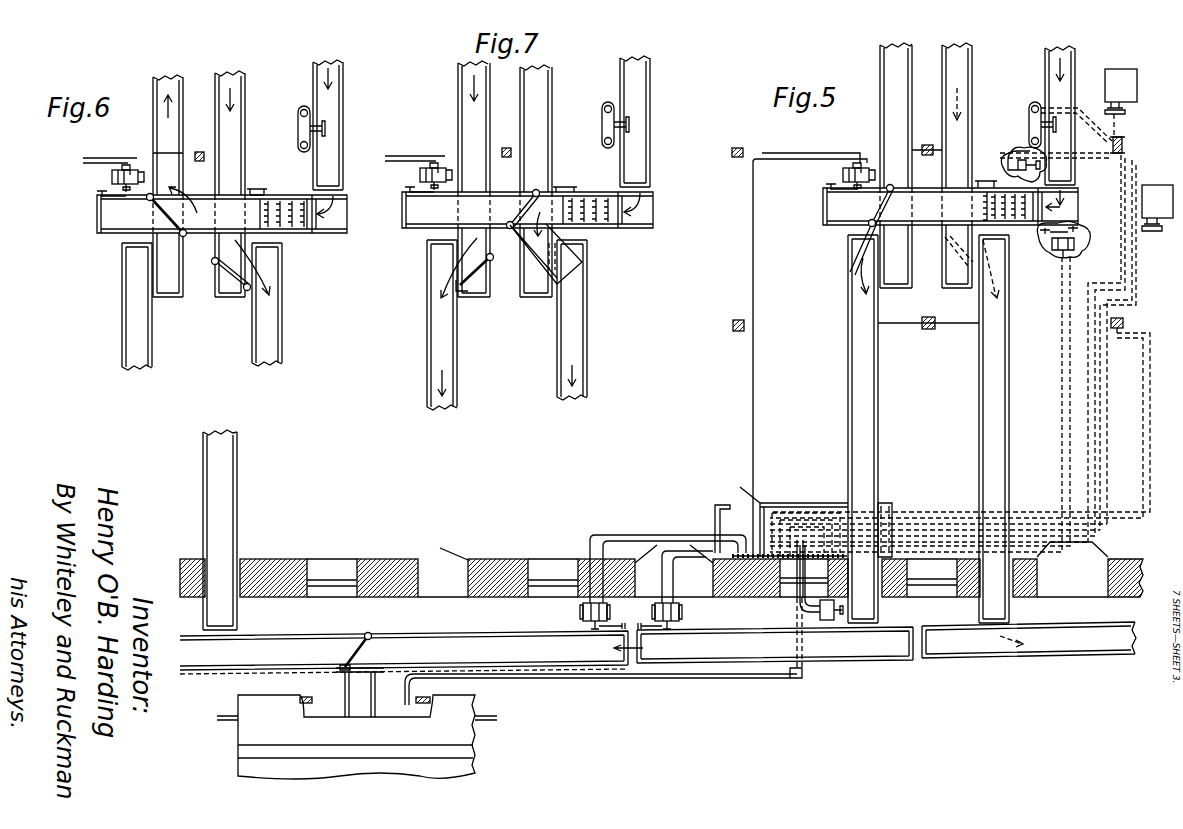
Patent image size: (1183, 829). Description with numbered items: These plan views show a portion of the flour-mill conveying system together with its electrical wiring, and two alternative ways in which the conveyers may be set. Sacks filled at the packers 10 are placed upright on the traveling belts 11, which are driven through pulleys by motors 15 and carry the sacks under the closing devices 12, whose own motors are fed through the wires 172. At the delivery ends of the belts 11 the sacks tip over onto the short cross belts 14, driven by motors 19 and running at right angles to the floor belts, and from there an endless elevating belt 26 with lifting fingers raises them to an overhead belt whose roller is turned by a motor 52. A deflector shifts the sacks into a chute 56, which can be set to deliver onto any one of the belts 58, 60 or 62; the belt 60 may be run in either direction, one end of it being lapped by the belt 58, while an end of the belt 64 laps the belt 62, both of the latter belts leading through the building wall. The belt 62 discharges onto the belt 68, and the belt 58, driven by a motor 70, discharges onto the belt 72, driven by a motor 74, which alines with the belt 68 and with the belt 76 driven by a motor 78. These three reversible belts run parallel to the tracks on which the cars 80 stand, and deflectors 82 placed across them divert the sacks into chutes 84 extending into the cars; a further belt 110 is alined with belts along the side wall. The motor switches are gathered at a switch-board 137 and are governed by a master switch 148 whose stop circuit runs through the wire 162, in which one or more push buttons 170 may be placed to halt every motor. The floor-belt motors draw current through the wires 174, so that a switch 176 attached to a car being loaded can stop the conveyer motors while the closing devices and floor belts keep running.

In FIG. 5, the packer 10 is at (1112, 69).
In FIG. 6, the traveling belt 11 is at (326, 66).
In FIG. 7, the traveling belt 11 is at (645, 83).
In FIG. 5, the traveling belt 11 is at (1053, 54).
In FIG. 6, the closing device 12 is at (299, 112).
In FIG. 7, the closing device 12 is at (602, 122).
In FIG. 5, the closing device 12 is at (1029, 110).
In FIG. 6, the cross belt 14 is at (331, 226).
In FIG. 7, the cross belt 14 is at (646, 224).
In FIG. 5, the cross belt 14 is at (1072, 196).
In FIG. 5, the motor 15 is at (1004, 163).
In FIG. 5, the motor 19 is at (1059, 256).
In FIG. 6, the elevating belt 26 is at (287, 203).
In FIG. 7, the elevating belt 26 is at (600, 222).
In FIG. 5, the elevating belt 26 is at (1023, 220).
In FIG. 6, the motor 52 is at (112, 178).
In FIG. 7, the motor 52 is at (420, 173).
In FIG. 5, the motor 52 is at (843, 173).
In FIG. 5, the chute 56 is at (851, 257).
In FIG. 6, the belt 58 is at (125, 334).
In FIG. 7, the belt 58 is at (455, 361).
In FIG. 5, the belt 58 is at (852, 366).
In FIG. 6, the belt 60 is at (162, 77).
In FIG. 7, the belt 60 is at (460, 94).
In FIG. 5, the belt 60 is at (882, 52).
In FIG. 6, the belt 62 is at (275, 330).
In FIG. 7, the belt 62 is at (590, 334).
In FIG. 5, the belt 62 is at (988, 366).
In FIG. 6, the belt 64 is at (224, 77).
In FIG. 7, the belt 64 is at (545, 86).
In FIG. 5, the belt 64 is at (974, 64).
In FIG. 5, the belt 68 is at (1084, 656).
In FIG. 5, the motor 70 is at (830, 622).
In FIG. 5, the belt 72 is at (898, 662).
In FIG. 5, the motor 74 is at (682, 613).
In FIG. 5, the belt 76 is at (601, 668).
In FIG. 5, the motor 78 is at (583, 613).
In FIG. 5, the car 80 is at (455, 735).
In FIG. 5, the deflector 82 is at (356, 652).
In FIG. 5, the chute 84 is at (350, 683).
In FIG. 5, the belt 110 is at (226, 510).
In FIG. 5, the switch-board 137 is at (790, 530).
In FIG. 5, the master switch 148 is at (886, 510).
In FIG. 5, the wire 162 is at (1148, 428).
In FIG. 5, the push button 170 is at (1117, 334).
In FIG. 5, the wires 172 is at (1142, 136).
In FIG. 5, the wires 174 is at (1122, 228).
In FIG. 5, the switch 176 is at (425, 690).